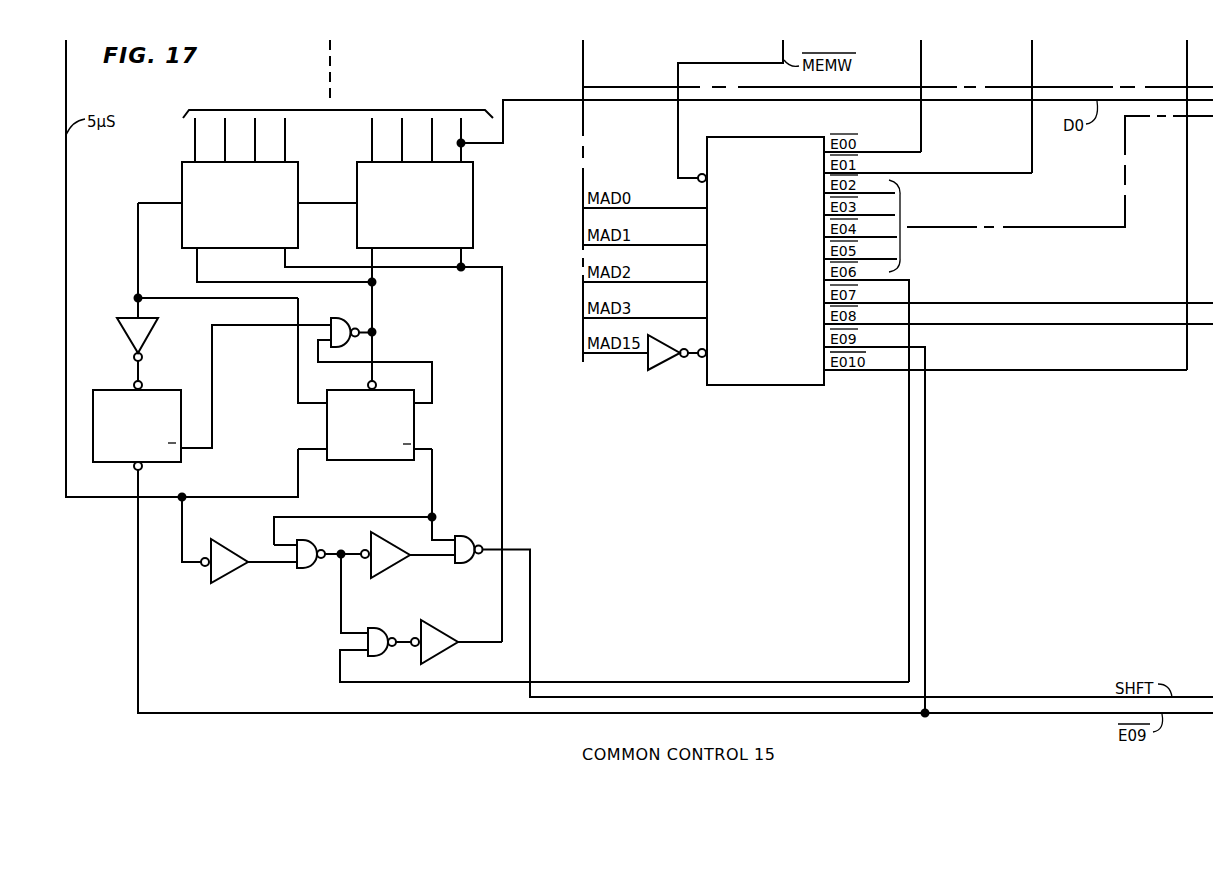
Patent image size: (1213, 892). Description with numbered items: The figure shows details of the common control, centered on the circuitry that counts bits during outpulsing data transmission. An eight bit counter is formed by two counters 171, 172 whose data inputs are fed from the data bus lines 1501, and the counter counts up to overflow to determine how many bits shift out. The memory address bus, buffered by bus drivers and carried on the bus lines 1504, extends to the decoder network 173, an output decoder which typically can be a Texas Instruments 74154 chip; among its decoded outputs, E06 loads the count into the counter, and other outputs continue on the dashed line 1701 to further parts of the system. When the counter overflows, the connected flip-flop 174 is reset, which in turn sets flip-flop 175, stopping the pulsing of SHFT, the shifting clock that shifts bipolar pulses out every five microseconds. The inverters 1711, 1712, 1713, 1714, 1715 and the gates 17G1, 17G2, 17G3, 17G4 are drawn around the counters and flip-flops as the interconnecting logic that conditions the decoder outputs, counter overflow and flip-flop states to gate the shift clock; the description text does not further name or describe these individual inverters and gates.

The data bus lines D0-D7 1501 is at (330, 92).
The bus line 1504 is at (583, 68).
The counter 171 is at (182, 178).
The counter 172 is at (473, 180).
The decoder network 173 is at (760, 137).
The flip-flop 174 is at (115, 390).
The flip-flop 175 is at (414, 433).
The line 1701 is at (1018, 226).
The inverter 1711 is at (665, 366).
The inverter 1712 is at (148, 330).
The inverter 1713 is at (226, 577).
The inverter 1714 is at (390, 569).
The inverter 1715 is at (446, 651).
The NAND gate 17G1 is at (350, 316).
The NAND gate 17G2 is at (305, 569).
The NAND gate 17G3 is at (468, 564).
The NAND gate 17G4 is at (380, 657).